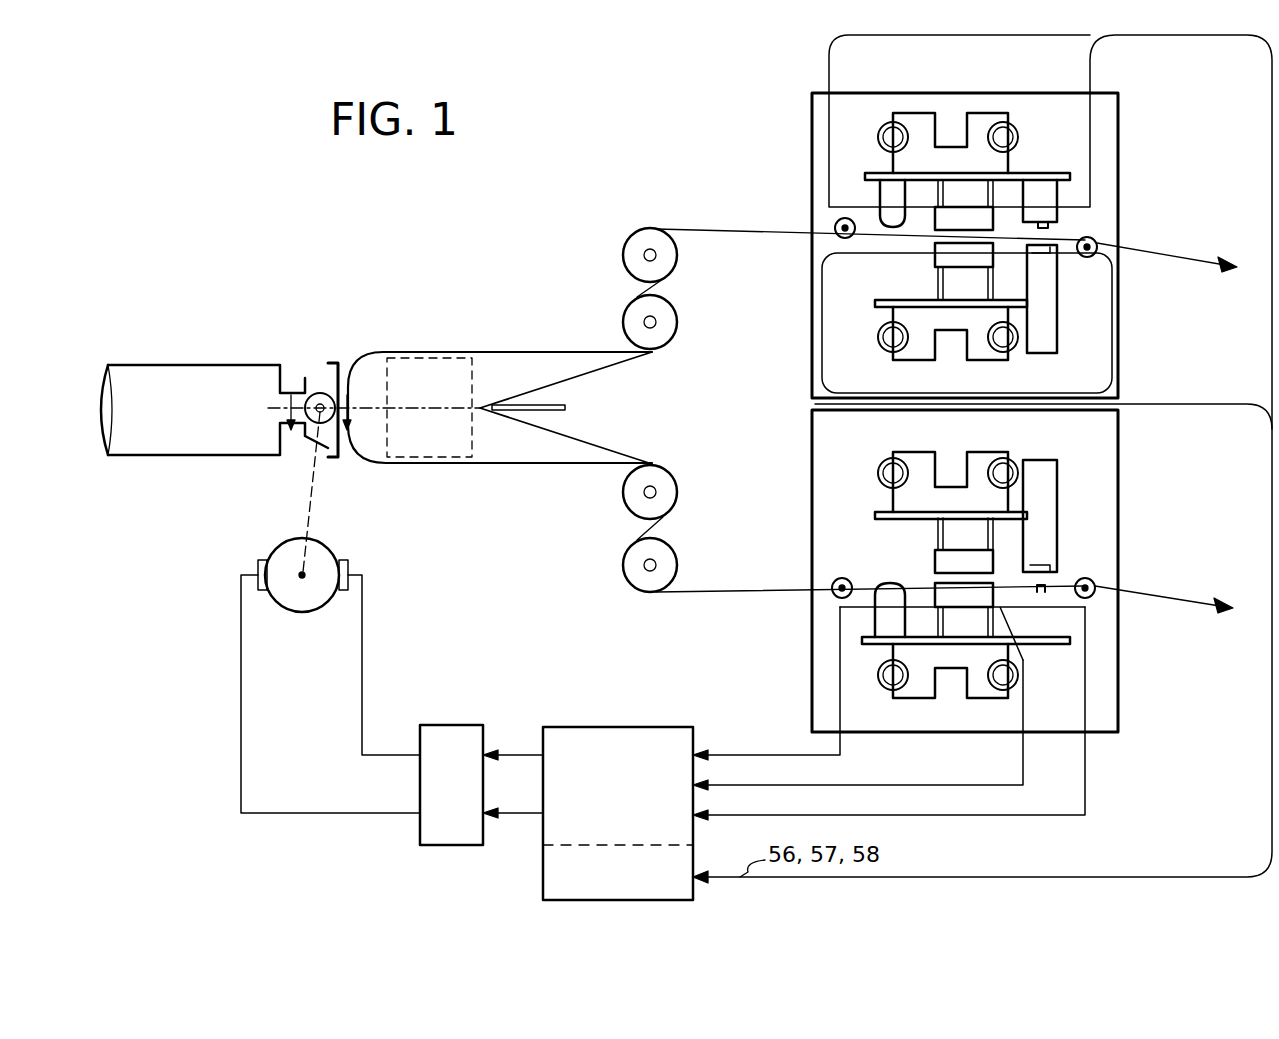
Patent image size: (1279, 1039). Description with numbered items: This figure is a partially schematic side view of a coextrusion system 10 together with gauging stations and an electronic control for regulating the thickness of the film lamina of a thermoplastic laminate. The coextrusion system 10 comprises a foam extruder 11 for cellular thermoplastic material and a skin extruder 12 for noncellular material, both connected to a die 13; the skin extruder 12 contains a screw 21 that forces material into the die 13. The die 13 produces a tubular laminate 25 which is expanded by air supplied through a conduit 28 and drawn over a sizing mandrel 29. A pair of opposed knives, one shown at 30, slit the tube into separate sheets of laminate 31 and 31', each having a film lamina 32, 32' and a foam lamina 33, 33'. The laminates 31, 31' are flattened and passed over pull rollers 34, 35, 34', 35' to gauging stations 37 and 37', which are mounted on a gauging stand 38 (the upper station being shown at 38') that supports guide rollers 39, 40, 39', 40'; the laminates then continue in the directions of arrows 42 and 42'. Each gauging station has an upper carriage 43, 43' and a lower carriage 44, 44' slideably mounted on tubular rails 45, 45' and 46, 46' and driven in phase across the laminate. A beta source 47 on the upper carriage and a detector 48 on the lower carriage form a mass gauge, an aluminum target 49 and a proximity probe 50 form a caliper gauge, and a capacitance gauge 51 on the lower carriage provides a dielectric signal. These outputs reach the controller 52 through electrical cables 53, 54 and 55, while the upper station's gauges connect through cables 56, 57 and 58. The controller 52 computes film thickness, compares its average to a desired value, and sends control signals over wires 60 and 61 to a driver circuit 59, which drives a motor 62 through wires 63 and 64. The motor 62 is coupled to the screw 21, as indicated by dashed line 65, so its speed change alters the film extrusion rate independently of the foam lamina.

The coextrusion system 10 is at (150, 468).
The foam extruder 11 is at (196, 366).
The skin extruder 12 is at (308, 396).
The die 13 is at (306, 437).
The screw 21 is at (326, 404).
The tubular laminate extrusion 25 is at (450, 352).
The conduit 28 is at (552, 406).
The sizing mandrel 29 is at (432, 464).
The knife 30 is at (485, 413).
The sheet of laminate 31 is at (576, 408).
The sheet of laminate 31' is at (680, 373).
The film lamina 32 is at (651, 588).
The film lamina 32' is at (654, 238).
The foam lamina 33 is at (870, 568).
The foam lamina 33' is at (870, 253).
The pull roller 34 is at (624, 502).
The pull roller 34' is at (624, 322).
The pull roller 35 is at (705, 526).
The pull roller 35' is at (709, 288).
The gauging station 37 is at (917, 482).
The gauging station 37' is at (922, 143).
The gauging stand 38 is at (991, 571).
The gauging stand 38' is at (965, 225).
The guide roller 39 is at (812, 607).
The guide roller 39' is at (813, 218).
The guide roller 40 is at (1119, 607).
The guide roller 40' is at (1128, 267).
The arrow 42 is at (1168, 611).
The arrow 42' is at (1185, 275).
The upper carriage assembly 43 is at (930, 533).
The upper carriage assembly 43' is at (972, 172).
The lower carriage assembly 44 is at (962, 660).
The lower carriage assembly 44' is at (930, 316).
The tubular rails 45 is at (954, 459).
The tubular rails 45' is at (936, 118).
The tubular rails 46 is at (973, 692).
The tubular rails 46' is at (944, 356).
The source 47 is at (964, 376).
The detector 48 is at (964, 440).
The aluminum target 49 is at (1048, 255).
The proximity probe 50 is at (1052, 226).
The gauge 51 is at (891, 408).
The controller 52 is at (620, 726).
The electrical cable 53 is at (725, 755).
The electrical cable 54 is at (730, 785).
The electrical cable 55 is at (730, 815).
The electrical cable 56 is at (1090, 82).
The electrical cable 57 is at (1214, 403).
The electrical cable 58 is at (829, 82).
The driver circuit 59 is at (464, 723).
The wire 60 is at (520, 752).
The wire 61 is at (520, 816).
The motor 62 is at (336, 548).
The wire 63 is at (240, 700).
The wire 64 is at (364, 632).
The dashed line 65 is at (305, 520).